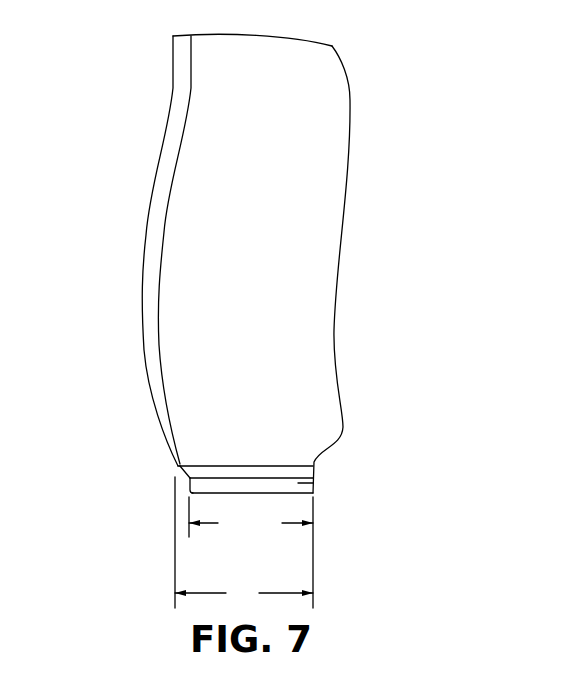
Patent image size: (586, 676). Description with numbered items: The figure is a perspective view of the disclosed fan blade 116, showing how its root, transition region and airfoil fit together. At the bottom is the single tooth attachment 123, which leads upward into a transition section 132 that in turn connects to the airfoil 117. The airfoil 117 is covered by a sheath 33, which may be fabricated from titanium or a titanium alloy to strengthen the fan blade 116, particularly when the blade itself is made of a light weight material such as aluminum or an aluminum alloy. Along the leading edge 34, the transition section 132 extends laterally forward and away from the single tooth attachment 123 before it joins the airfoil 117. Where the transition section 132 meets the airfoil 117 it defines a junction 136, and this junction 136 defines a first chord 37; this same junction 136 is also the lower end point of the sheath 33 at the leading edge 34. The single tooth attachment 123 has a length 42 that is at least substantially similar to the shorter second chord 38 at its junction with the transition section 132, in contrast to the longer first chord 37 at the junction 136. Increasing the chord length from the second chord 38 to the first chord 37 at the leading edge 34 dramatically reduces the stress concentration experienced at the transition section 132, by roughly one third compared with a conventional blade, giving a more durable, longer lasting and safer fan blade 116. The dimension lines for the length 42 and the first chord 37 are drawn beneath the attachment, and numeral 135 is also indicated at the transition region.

The fan blade 116 is at (397, 106).
The sheath 33 is at (302, 209).
The airfoil 117 is at (340, 285).
The leading edge 34 is at (147, 235).
The first chord 37 is at (227, 467).
The second chord 38 is at (260, 480).
The length of the single tooth attachment 42 is at (251, 552).
The single tooth attachment 123 is at (313, 483).
The junction 136 is at (178, 466).
The transition section 132 is at (180, 472).
The platform notch lower surface 135 is at (185, 477).